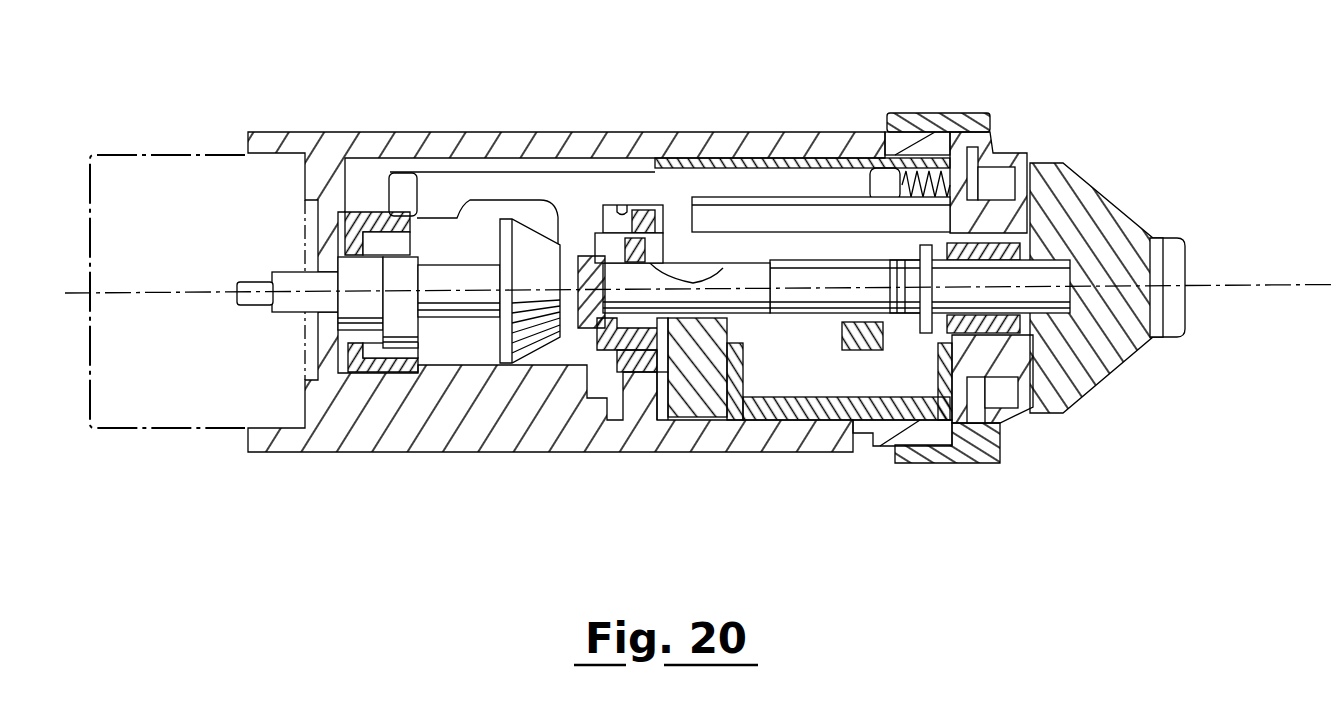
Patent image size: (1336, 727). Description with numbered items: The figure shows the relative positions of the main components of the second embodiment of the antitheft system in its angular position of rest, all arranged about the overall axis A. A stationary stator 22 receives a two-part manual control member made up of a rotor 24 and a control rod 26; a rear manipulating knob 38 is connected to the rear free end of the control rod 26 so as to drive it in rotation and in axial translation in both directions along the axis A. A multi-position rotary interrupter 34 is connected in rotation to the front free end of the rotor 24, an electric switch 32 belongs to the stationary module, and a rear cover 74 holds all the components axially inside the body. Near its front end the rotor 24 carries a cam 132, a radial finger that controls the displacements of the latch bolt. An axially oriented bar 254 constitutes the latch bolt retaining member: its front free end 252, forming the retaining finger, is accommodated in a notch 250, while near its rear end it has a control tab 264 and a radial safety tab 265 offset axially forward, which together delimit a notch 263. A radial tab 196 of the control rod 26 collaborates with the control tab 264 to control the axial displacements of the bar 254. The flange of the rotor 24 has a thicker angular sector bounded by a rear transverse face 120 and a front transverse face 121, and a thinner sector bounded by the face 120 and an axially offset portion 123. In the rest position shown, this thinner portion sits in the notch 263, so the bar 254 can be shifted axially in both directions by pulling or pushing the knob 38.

The stator 22 is at (672, 397).
The rotor 24 is at (477, 257).
The control rod 26 is at (1038, 271).
The electric switch 32 is at (836, 360).
The multi-position rotary interrupter 34 is at (192, 153).
The manipulating knob 38 is at (1080, 175).
The rear cover 74 is at (1003, 124).
The rear transverse face 120 is at (698, 397).
The front transverse face 121 is at (593, 407).
The offset portion 123 is at (662, 397).
The cam 132 is at (445, 348).
The radial tab 196 is at (723, 268).
The notch 250 is at (367, 212).
The front free end 252 is at (397, 195).
The bar 254 is at (680, 218).
The notch 263 is at (615, 222).
The control tab 264 is at (690, 223).
The radial safety tab 265 is at (600, 221).
The axis A is at (1233, 285).